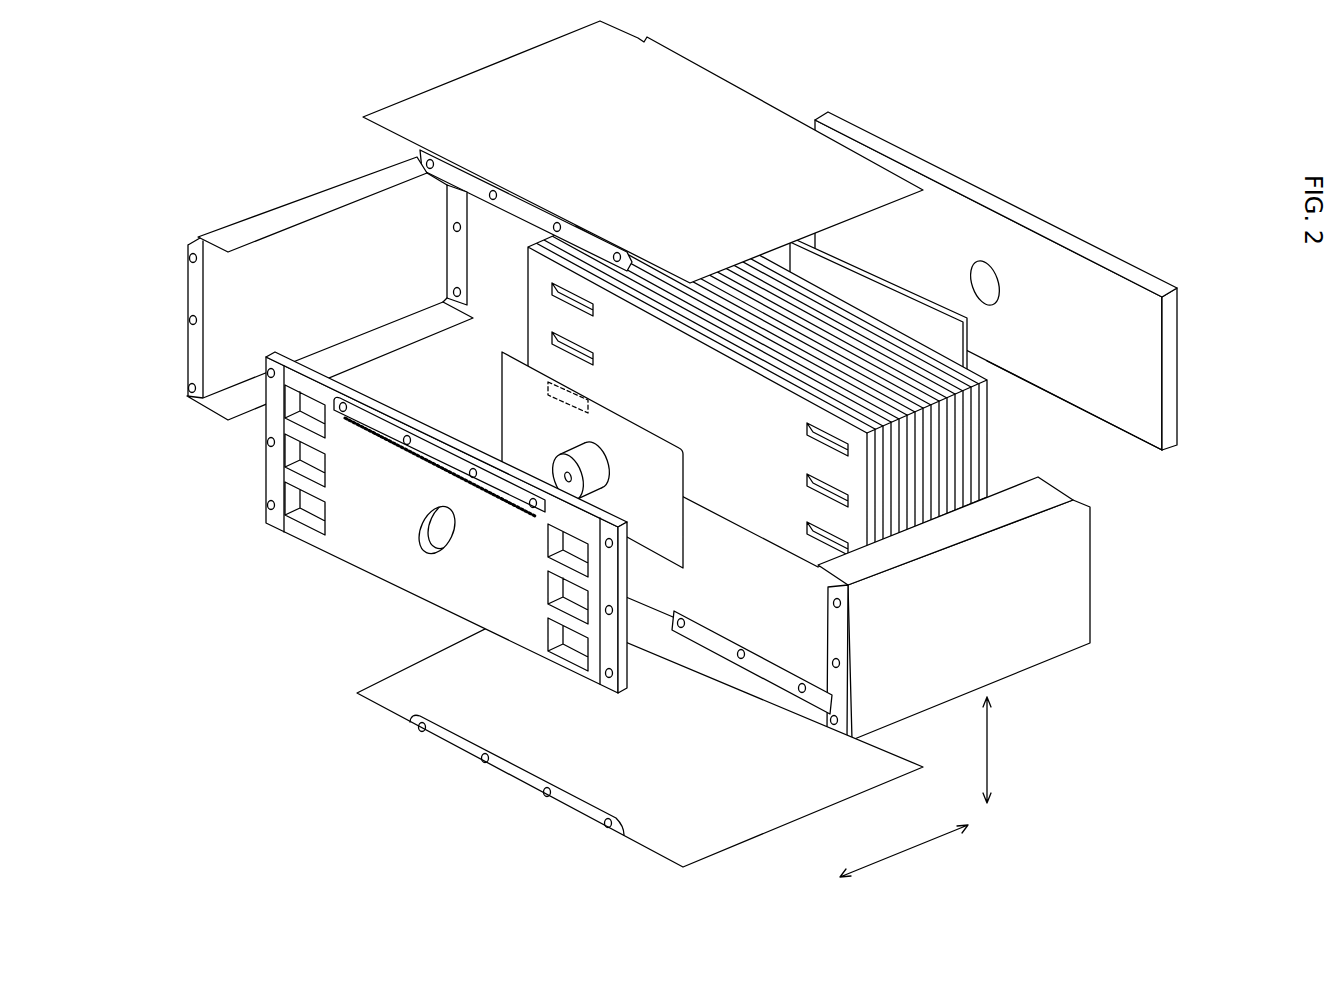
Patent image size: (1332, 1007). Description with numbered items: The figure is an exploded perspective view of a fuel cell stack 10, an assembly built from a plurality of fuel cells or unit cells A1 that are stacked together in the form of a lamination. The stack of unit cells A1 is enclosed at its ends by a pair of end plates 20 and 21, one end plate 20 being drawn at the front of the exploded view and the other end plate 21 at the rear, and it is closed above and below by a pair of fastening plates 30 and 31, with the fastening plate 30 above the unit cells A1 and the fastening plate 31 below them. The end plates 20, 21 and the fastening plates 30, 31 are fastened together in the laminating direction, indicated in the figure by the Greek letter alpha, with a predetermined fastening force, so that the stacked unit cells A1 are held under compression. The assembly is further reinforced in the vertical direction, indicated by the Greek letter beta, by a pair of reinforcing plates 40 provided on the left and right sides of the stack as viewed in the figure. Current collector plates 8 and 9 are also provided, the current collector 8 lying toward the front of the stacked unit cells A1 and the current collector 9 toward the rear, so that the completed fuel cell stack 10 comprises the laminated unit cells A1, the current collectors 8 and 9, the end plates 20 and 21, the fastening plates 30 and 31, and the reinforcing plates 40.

The fuel cell stack 10 is at (634, 449).
The current collector 8 is at (502, 388).
The current collector 9 is at (889, 277).
The end plate 20 is at (300, 549).
The end plate 21 is at (1072, 236).
The fastening plate 30 is at (647, 151).
The fastening plate 31 is at (658, 743).
The reinforcing plate 40 is at (184, 284).
The unit cell A1 is at (528, 279).